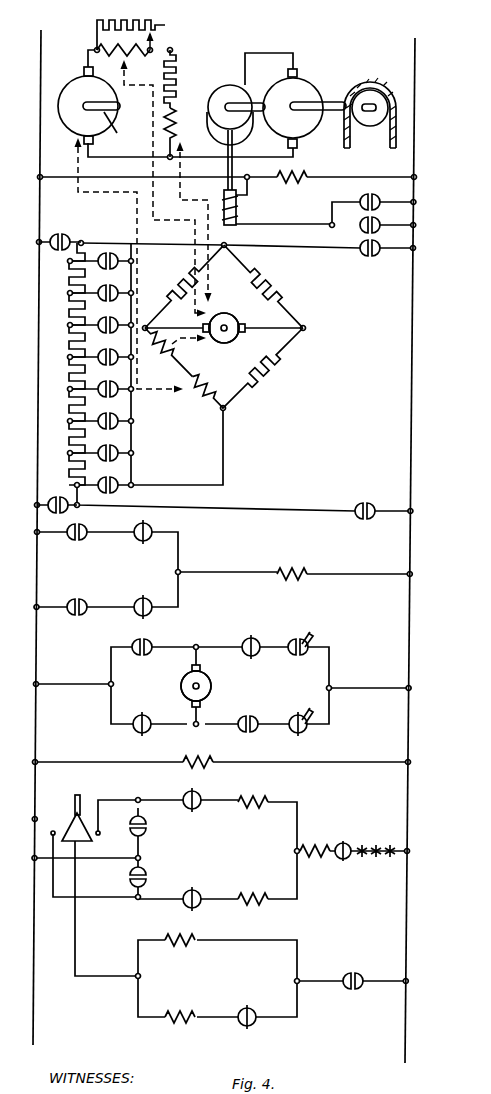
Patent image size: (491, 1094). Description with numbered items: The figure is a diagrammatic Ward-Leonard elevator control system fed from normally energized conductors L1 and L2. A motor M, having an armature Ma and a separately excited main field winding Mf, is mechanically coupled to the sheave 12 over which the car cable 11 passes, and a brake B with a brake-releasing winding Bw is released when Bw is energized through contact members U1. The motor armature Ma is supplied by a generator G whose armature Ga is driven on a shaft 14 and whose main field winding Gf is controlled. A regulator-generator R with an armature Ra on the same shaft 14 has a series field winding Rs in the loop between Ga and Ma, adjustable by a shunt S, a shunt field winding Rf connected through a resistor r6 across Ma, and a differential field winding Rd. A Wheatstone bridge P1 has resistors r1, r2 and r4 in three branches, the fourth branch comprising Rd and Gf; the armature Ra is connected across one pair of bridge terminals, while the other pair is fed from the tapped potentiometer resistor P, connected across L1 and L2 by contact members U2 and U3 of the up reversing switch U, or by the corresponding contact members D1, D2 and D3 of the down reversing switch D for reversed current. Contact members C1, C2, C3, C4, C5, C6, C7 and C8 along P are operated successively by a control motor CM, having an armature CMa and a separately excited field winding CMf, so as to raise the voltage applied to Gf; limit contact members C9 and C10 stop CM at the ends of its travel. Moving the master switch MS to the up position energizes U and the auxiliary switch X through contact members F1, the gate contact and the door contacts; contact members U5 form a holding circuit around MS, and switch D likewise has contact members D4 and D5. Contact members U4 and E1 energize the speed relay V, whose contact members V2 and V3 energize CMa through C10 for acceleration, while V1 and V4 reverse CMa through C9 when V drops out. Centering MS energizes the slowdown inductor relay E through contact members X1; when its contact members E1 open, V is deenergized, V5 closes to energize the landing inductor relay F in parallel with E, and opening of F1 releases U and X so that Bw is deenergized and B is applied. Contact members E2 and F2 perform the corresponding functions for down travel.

The energized conductor L1 is at (41, 78).
The energized conductor L2 is at (415, 84).
The generator G is at (97, 106).
The generator armature Ga is at (74, 80).
The shaft 14 is at (118, 127).
The shunt S is at (136, 33).
The series field winding Rs is at (123, 61).
The resistor r6 is at (177, 80).
The shunt field winding Rf is at (176, 130).
The brake B is at (236, 137).
The brake-releasing winding Bw is at (240, 208).
The motor M is at (301, 100).
The motor armature Ma is at (316, 88).
The main field winding Mf is at (304, 174).
The sheave 12 is at (373, 96).
The cable 11 is at (390, 146).
The contact members U1 is at (374, 200).
The down relay contact D1 is at (375, 223).
The down relay contact D2 is at (375, 246).
The contact members U2 is at (62, 235).
The potentiometer resistor P is at (73, 349).
The contact members C1 is at (101, 256).
The contact members C2 is at (101, 285).
The contact members C3 is at (101, 317).
The contact members C4 is at (101, 349).
The contact members C5 is at (101, 381).
The contact members C6 is at (101, 413).
The contact members C7 is at (101, 445).
The contact members C8 is at (104, 477).
The potentiometer P1 is at (236, 330).
The resistor r1 is at (184, 286).
The resistor r2 is at (263, 286).
The resistor r4 is at (262, 368).
The differential field winding Rd is at (169, 353).
The main field winding Gf is at (197, 395).
The regulator-generator R is at (224, 316).
The regulator-generator armature Ra is at (238, 318).
The down relay contact D3 is at (57, 498).
The contact members U3 is at (367, 503).
The contact members U4 is at (76, 541).
The contact members E1 is at (138, 540).
The down relay contact D4 is at (76, 598).
The contact members E2 is at (146, 604).
The speed relay V is at (290, 568).
The contact members V2 is at (146, 637).
The contact members V1 is at (254, 637).
The contact members C9 is at (298, 638).
The control motor CM is at (184, 684).
The control motor armature CMa is at (209, 680).
The contact members V4 is at (147, 716).
The contact members V3 is at (252, 718).
The contact members C10 is at (298, 715).
The separately excited field winding CMf is at (211, 756).
The master switch MS is at (70, 804).
The contact members F1 is at (188, 795).
The up reversing switch U is at (255, 792).
The contact members U5 is at (146, 824).
The down relay contact D5 is at (146, 878).
The contact members F2 is at (190, 893).
The down reversing switch D is at (252, 890).
The auxiliary switch X is at (388, 877).
The slowdown inductor relay E is at (195, 937).
The landing inductor relay F is at (183, 1017).
The contact members V5 is at (250, 1010).
The contact members X1 is at (353, 971).